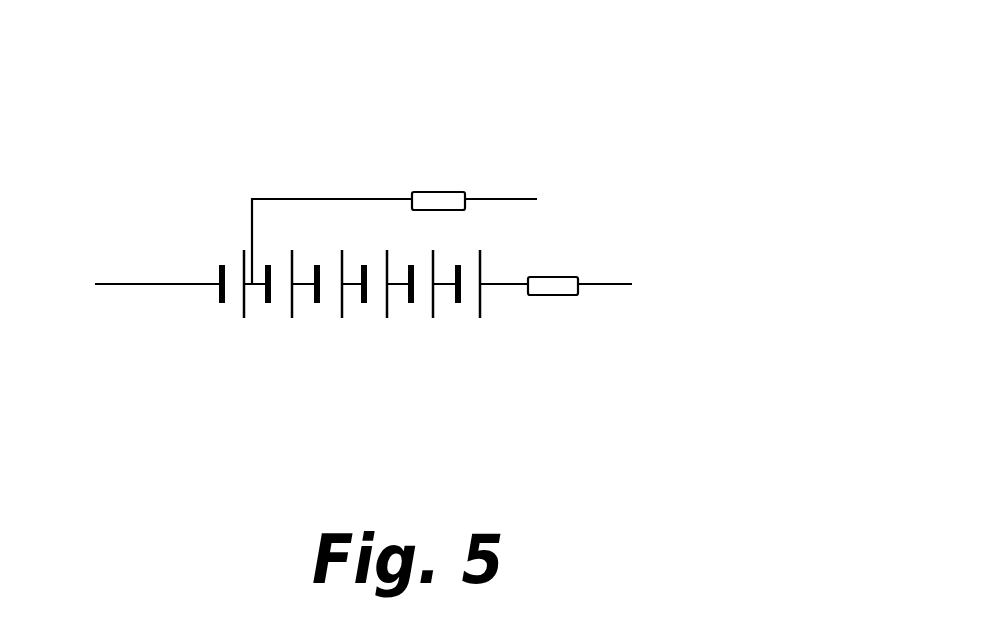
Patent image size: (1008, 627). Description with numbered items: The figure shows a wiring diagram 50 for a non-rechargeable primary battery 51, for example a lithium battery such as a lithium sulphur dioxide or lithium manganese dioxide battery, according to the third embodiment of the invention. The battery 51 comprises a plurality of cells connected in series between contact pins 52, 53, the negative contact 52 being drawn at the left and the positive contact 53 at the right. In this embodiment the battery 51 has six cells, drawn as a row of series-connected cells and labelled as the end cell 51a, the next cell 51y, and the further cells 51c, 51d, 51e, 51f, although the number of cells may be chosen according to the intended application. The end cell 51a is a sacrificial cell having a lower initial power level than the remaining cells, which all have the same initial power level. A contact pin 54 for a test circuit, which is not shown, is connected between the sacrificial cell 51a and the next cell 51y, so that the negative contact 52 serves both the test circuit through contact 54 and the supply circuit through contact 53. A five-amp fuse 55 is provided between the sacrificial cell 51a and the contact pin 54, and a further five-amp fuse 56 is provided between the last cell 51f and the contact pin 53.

The wiring diagram 50 is at (783, 115).
The battery 51 is at (321, 212).
The sacrificial cell 51a is at (225, 315).
The battery cell 51y is at (268, 315).
The cell 51c is at (315, 315).
The cell 51d is at (367, 315).
The cell 51e is at (413, 315).
The cell 51f is at (460, 315).
The contact pin 52 is at (97, 286).
The contact pin 53 is at (632, 284).
The contact pin 54 is at (537, 199).
The fuse 55 is at (440, 197).
The fuse 56 is at (577, 294).